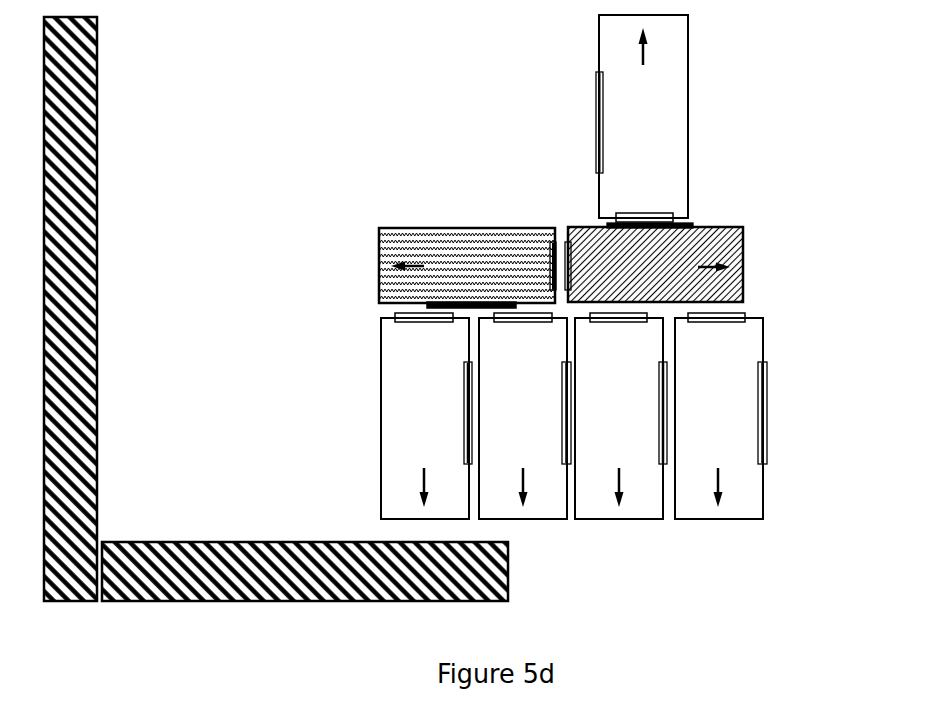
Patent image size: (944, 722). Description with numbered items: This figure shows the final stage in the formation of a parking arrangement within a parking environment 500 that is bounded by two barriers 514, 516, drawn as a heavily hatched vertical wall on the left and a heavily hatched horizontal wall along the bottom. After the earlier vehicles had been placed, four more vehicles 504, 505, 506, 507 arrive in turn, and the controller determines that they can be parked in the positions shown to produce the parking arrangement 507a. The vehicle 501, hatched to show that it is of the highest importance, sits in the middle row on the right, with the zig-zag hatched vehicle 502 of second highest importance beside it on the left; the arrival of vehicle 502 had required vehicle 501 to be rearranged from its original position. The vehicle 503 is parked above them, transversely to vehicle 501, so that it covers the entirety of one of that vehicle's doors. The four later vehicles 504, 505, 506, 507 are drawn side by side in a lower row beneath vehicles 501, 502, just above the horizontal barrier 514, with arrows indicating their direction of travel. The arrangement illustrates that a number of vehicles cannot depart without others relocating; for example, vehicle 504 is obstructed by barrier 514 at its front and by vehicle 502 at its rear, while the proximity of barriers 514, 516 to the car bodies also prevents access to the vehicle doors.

The parking environment 500 is at (196, 96).
The parking arrangement 507a is at (404, 78).
The barrier 516 is at (85, 180).
The barrier 514 is at (500, 583).
The vehicle 503 is at (677, 79).
The vehicle 502 is at (380, 284).
The vehicle 501 is at (725, 248).
The vehicle 504 is at (391, 452).
The vehicle 505 is at (547, 508).
The vehicle 506 is at (638, 507).
The vehicle 507 is at (750, 475).